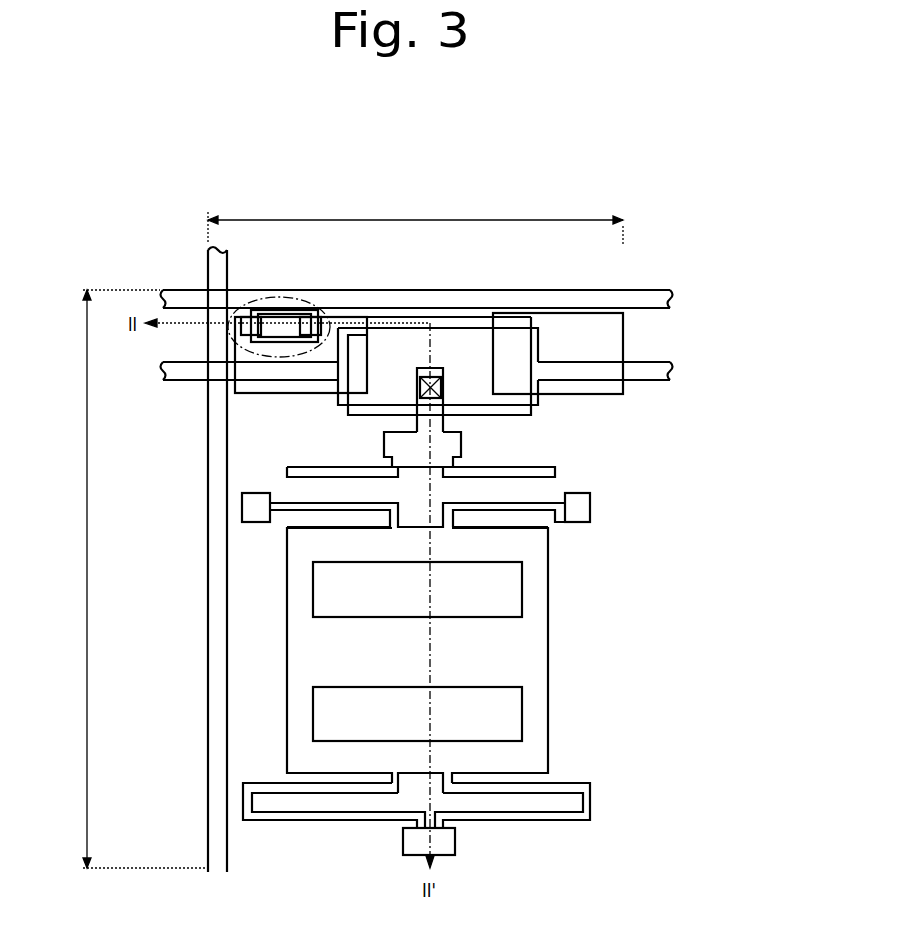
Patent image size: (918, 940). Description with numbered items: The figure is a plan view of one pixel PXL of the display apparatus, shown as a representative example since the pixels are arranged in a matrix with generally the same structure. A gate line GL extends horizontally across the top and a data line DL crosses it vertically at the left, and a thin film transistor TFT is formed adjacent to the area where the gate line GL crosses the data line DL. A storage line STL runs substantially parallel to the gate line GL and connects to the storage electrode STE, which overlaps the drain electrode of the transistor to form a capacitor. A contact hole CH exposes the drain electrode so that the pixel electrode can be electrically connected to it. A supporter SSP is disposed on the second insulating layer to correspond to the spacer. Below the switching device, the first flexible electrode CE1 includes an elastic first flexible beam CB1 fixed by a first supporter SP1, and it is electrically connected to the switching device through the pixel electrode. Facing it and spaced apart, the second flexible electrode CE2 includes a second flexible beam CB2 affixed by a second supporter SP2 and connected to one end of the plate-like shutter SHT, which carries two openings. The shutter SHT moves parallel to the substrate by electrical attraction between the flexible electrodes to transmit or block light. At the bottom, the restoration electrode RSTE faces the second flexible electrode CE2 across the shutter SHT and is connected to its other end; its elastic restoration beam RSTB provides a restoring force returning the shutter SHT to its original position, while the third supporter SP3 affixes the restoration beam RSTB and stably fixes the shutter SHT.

The pixel PXL is at (334, 531).
The data line DL is at (207, 438).
The gate line GL is at (672, 296).
The storage line STL is at (672, 368).
The thin film transistor TFT is at (281, 295).
The supporter SSP is at (234, 386).
The storage electrode STE is at (540, 400).
The contact hole CH is at (443, 386).
The first flexible electrode CE1 is at (688, 422).
The first supporter SP1 is at (448, 440).
The first flexible beam CB1 is at (558, 470).
The second flexible electrode CE2 is at (688, 497).
The second supporter SP2 is at (582, 508).
The second flexible beam CB2 is at (557, 522).
The shutter SHT is at (535, 648).
The restoration electrode RSTE is at (698, 792).
The restoration beam RSTB is at (592, 803).
The third supporter SP3 is at (457, 838).